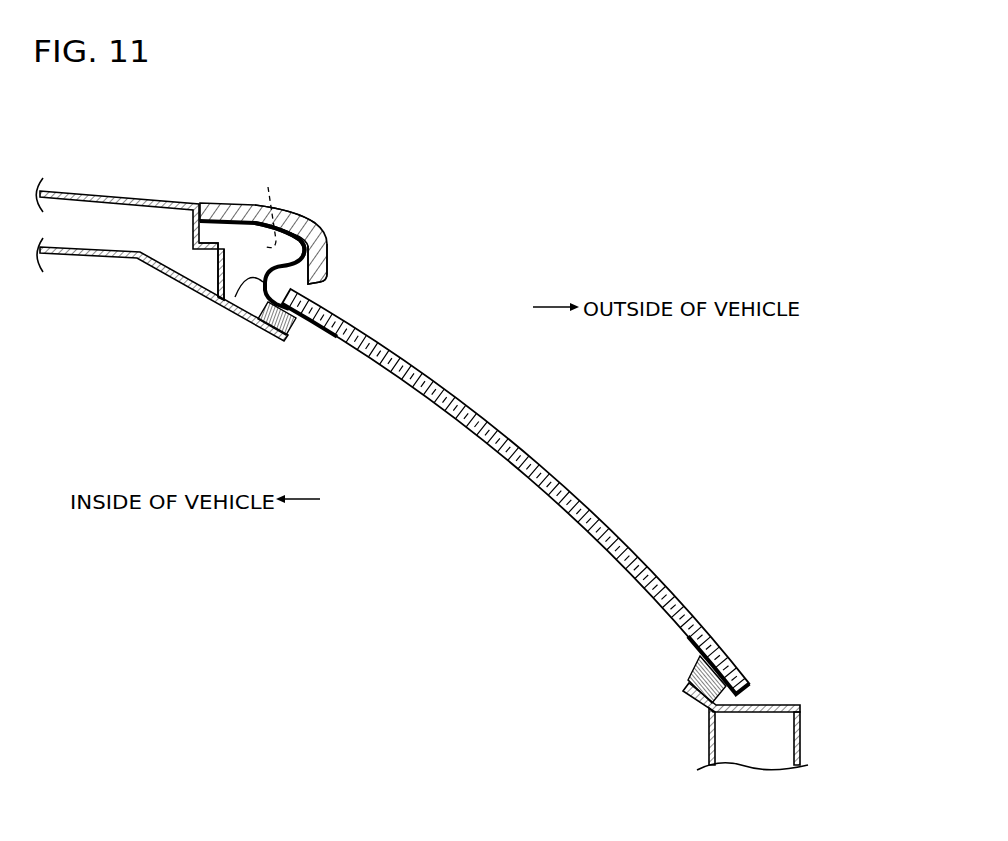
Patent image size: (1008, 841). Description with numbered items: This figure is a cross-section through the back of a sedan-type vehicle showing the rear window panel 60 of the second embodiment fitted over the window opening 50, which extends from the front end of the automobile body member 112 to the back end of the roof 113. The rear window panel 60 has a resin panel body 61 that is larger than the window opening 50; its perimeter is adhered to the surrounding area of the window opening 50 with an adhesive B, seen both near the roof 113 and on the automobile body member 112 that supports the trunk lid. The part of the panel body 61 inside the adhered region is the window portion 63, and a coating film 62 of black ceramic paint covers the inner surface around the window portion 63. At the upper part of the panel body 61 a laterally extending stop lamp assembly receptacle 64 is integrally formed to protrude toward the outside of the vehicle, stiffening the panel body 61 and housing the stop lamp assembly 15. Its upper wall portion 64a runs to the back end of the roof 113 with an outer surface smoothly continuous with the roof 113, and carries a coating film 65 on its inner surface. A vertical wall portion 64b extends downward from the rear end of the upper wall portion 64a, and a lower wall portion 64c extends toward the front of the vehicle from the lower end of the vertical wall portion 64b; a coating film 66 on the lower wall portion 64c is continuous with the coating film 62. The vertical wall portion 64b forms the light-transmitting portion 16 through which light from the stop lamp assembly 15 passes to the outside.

The roof 113 is at (148, 186).
The automobile body member 112 is at (697, 716).
The rear window panel 60 is at (561, 424).
The panel body 61 is at (456, 397).
The coating film 62 is at (320, 336).
The window portion 63 is at (607, 528).
The stop lamp assembly receptacle 64 is at (290, 249).
The upper wall portion 64a is at (300, 217).
The vertical wall portion 64b is at (323, 242).
The lower wall portion 64c is at (326, 282).
The stop lamp assembly 15 is at (272, 204).
The light-transmitting portion 16 is at (262, 290).
The coating film 65 is at (220, 226).
The coating film 66 is at (233, 300).
The window opening 50 is at (283, 344).
The adhesive B is at (700, 673).